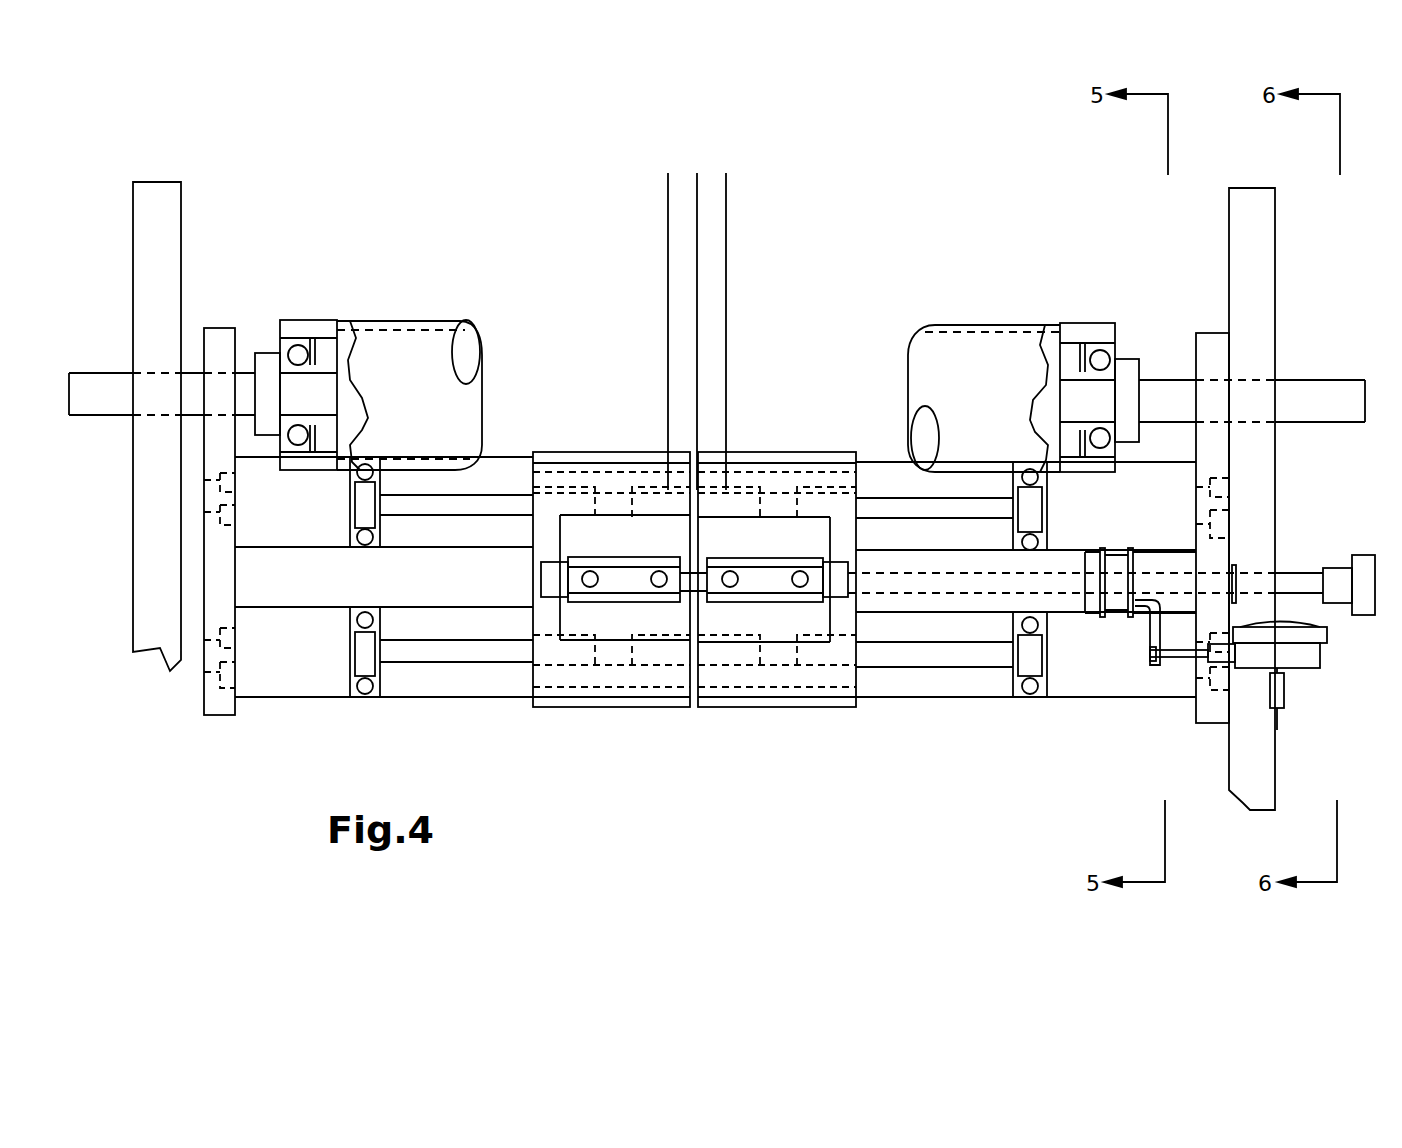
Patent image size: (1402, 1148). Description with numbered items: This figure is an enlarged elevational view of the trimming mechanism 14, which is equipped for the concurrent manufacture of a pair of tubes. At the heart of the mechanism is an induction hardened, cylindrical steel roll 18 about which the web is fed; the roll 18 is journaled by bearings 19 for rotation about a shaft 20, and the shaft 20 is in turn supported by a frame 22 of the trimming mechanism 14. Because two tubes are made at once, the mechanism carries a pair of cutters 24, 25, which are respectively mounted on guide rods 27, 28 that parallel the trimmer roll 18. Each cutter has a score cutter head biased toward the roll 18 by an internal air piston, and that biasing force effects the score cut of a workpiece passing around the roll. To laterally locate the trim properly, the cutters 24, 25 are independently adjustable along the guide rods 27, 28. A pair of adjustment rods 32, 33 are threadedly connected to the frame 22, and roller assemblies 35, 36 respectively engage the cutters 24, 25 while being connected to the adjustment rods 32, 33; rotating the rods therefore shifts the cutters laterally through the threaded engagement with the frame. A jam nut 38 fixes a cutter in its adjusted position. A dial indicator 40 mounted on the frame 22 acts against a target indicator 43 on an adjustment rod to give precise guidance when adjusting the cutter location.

The trimming mechanism 14 is at (798, 316).
The roll 18 is at (975, 335).
The bearings 19 is at (1120, 350).
The shaft 20 is at (1340, 400).
The frame 22 is at (1256, 195).
The cutter 24 is at (608, 708).
The cutter 25 is at (785, 710).
The guide rod 27 is at (515, 510).
The guide rod 28 is at (486, 652).
The adjustment rod 32 is at (1045, 585).
The adjustment rod 33 is at (692, 578).
The roller assembly 35 is at (752, 582).
The roller assembly 36 is at (612, 580).
The jam nut 38 is at (1233, 576).
The dial indicator 40 is at (1305, 655).
The target indicator 43 is at (1137, 552).